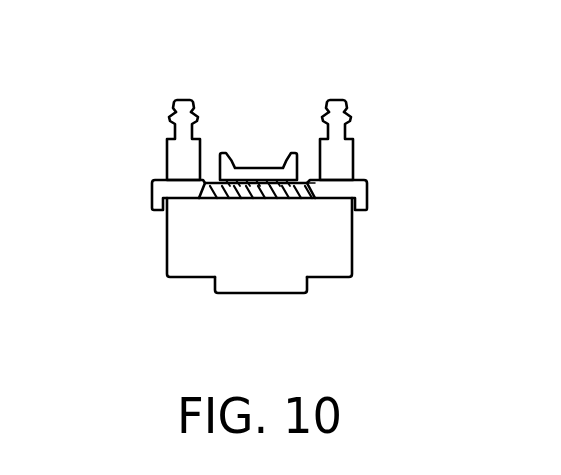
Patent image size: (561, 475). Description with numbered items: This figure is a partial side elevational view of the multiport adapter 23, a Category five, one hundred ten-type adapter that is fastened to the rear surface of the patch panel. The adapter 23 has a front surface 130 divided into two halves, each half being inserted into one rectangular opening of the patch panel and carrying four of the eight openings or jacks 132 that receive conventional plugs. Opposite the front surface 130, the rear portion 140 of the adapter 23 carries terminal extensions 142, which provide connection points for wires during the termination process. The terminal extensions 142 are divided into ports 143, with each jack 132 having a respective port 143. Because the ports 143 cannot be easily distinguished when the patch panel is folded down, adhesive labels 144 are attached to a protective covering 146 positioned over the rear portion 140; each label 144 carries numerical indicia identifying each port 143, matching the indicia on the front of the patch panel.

The multiport adapter 23 is at (387, 170).
The front surface 130 is at (338, 280).
The jack 132 is at (233, 297).
The rear portion 140 is at (167, 160).
The terminal extension 142 is at (194, 104).
The port 143 is at (184, 99).
The adhesive label 144 is at (243, 168).
The protective covering 146 is at (367, 188).